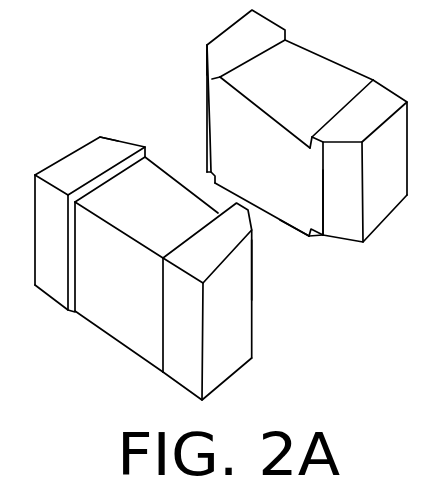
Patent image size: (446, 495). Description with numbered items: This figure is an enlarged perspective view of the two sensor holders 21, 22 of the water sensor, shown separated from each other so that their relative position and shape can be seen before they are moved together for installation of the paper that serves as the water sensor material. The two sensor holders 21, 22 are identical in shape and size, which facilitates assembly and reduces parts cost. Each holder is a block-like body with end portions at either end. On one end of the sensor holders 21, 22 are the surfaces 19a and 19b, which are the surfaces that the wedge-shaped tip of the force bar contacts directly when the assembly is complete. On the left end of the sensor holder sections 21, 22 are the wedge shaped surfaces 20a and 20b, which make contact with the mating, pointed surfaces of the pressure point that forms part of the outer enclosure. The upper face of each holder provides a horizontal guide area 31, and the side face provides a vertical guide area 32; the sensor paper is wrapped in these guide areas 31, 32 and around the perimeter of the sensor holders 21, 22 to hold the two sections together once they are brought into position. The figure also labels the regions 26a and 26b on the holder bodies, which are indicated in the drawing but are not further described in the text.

The sensor holder 21 is at (373, 99).
The sensor holder 22 is at (228, 322).
The horizontal guide area 31 is at (300, 104).
The vertical guide area 32 is at (137, 298).
The surface 19a is at (348, 213).
The surface 19b is at (252, 230).
The wedge shaped surface 20a is at (206, 62).
The wedge shaped surface 20b is at (113, 136).
The side face 26a is at (255, 163).
The bottom edge portion 26b is at (303, 240).